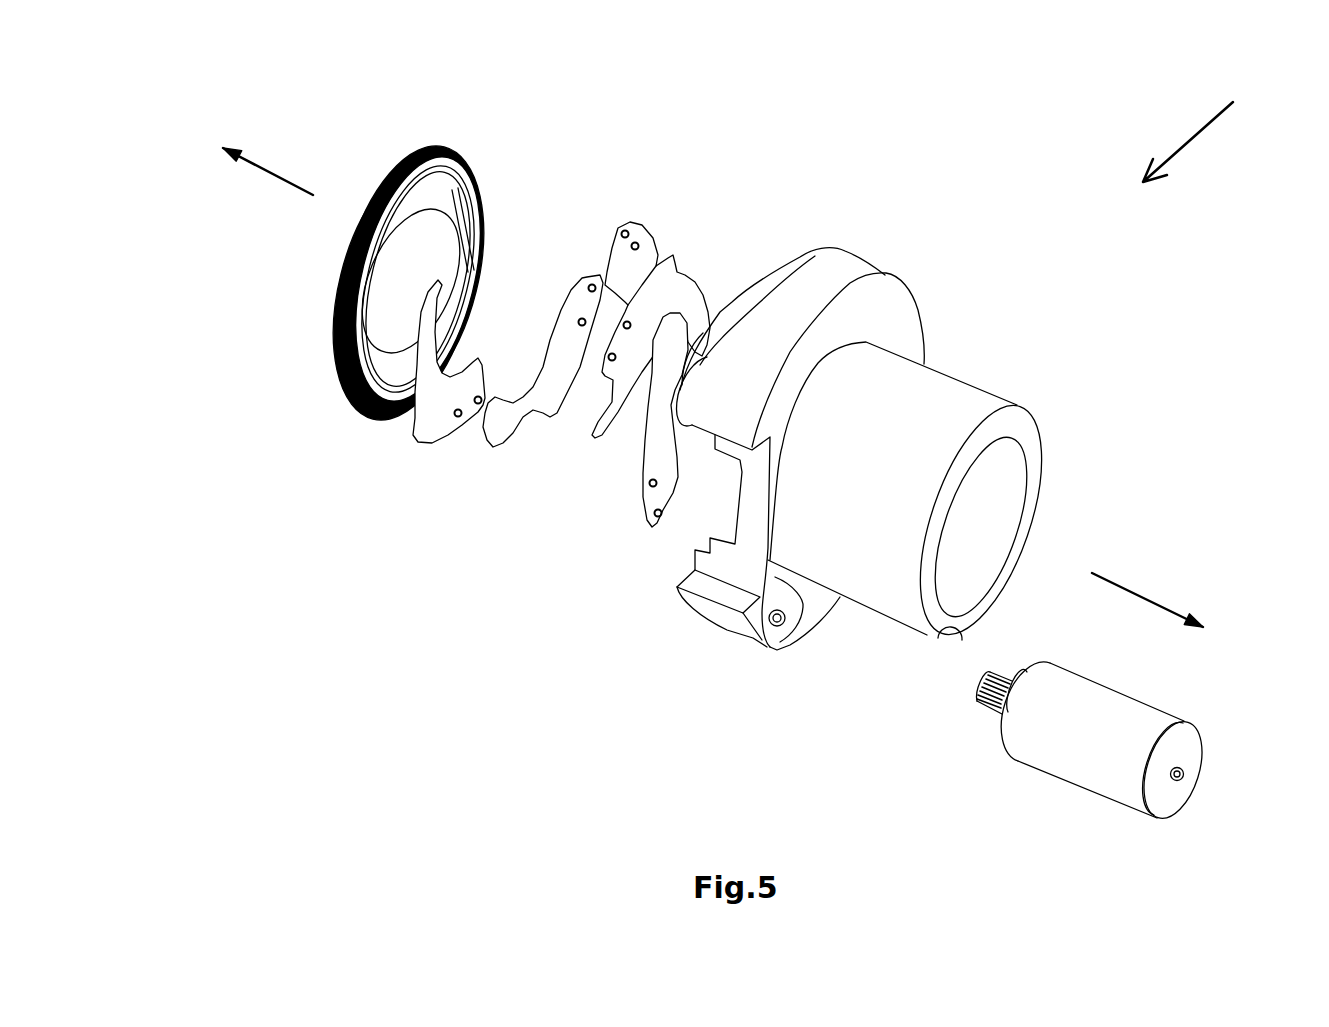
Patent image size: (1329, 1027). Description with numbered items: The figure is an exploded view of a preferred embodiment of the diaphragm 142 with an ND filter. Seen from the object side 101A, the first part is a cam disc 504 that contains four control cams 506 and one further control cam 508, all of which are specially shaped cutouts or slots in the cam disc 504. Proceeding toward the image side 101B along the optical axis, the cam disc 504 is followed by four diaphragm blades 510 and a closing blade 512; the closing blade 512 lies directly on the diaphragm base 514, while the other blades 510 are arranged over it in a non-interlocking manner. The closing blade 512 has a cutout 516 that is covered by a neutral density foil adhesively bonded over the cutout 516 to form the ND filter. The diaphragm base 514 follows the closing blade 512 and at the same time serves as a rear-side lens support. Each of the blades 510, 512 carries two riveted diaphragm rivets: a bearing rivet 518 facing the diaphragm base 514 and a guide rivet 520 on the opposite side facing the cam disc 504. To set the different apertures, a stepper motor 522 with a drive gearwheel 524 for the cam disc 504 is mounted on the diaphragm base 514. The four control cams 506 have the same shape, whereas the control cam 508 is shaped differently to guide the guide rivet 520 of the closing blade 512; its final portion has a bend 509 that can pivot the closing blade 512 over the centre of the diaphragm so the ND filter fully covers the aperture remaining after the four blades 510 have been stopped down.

The object side 101A is at (273, 172).
The image side 101B is at (1150, 595).
The diaphragm 142 is at (1205, 118).
The cam disc 504 is at (342, 405).
The control cams 506 is at (473, 165).
The control cam 508 is at (360, 413).
The bend 509 is at (340, 265).
The diaphragm blades 510 is at (493, 443).
The closing blade 512 is at (730, 303).
The diaphragm base 514 is at (833, 287).
The cutout 516 is at (703, 345).
The bearing rivet 518 is at (657, 527).
The guide rivet 520 is at (643, 510).
The stepper motor 522 is at (1087, 790).
The drive gearwheel 524 is at (977, 715).